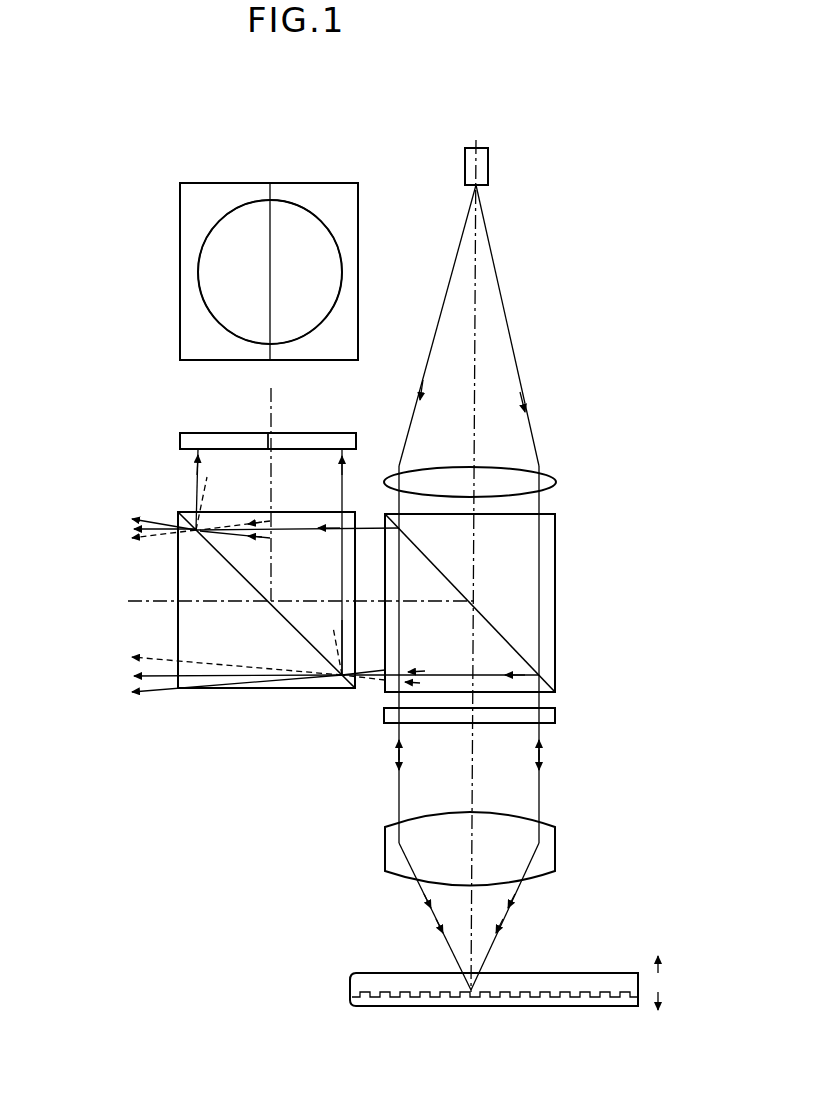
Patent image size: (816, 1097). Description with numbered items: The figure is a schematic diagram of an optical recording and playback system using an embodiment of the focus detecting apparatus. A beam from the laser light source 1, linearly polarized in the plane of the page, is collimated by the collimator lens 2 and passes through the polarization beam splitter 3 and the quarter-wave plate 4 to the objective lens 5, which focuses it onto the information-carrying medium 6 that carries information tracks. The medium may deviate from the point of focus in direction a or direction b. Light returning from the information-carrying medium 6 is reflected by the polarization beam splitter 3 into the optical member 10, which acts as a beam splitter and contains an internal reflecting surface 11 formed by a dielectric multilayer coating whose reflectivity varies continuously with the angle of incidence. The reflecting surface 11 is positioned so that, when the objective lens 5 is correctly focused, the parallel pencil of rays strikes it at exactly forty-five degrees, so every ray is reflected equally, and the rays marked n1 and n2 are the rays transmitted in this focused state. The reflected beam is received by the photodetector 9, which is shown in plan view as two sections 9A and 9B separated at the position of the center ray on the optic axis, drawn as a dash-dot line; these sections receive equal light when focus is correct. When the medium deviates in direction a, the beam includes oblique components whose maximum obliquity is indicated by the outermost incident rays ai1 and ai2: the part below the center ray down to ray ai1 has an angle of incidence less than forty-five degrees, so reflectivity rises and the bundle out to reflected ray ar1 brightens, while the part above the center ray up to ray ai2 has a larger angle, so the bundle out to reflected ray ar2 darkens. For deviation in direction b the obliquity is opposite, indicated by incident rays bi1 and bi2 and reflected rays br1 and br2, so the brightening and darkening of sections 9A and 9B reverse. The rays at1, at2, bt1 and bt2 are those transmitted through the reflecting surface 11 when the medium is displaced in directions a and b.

The laser light source 1 is at (488, 165).
The collimator lens 2 is at (556, 482).
The polarization beam splitter 3 is at (497, 630).
The quarter-wave plate 4 is at (555, 715).
The objective lens 5 is at (555, 845).
The information-carrying medium 6 is at (547, 998).
The photodetector 9 is at (182, 433).
The photodetector section 9A is at (320, 218).
The photodetector section 9B is at (217, 227).
The optical member 10 is at (287, 690).
The reflecting surface 11 is at (282, 617).
The deviation direction a is at (670, 965).
The deviation direction b is at (670, 1005).
The outermost incident ray ai1 is at (412, 671).
The reflected ray ar1 is at (345, 636).
The transmitted ray at1 is at (140, 694).
The incident ray bi1 is at (412, 684).
The reflected ray br1 is at (333, 630).
The transmitted ray bt1 is at (138, 658).
The transmitted ray in focused state n1 is at (130, 677).
The outermost incident ray ai2 is at (255, 541).
The reflected ray ar2 is at (189, 484).
The transmitted ray at2 is at (132, 518).
The incident ray bi2 is at (256, 520).
The reflected ray br2 is at (208, 479).
The transmitted ray bt2 is at (135, 539).
The transmitted ray in focused state n2 is at (130, 529).